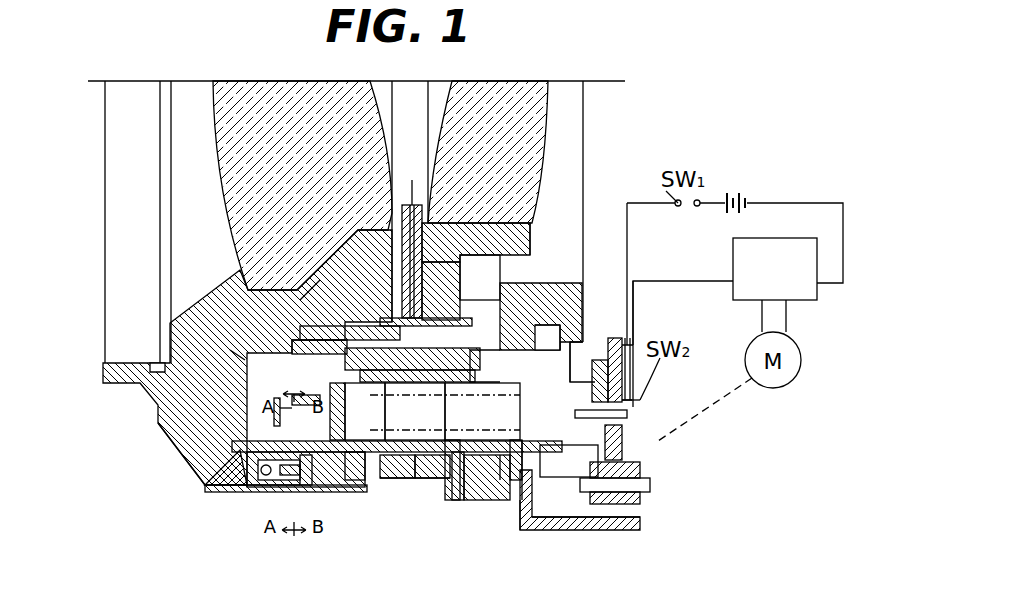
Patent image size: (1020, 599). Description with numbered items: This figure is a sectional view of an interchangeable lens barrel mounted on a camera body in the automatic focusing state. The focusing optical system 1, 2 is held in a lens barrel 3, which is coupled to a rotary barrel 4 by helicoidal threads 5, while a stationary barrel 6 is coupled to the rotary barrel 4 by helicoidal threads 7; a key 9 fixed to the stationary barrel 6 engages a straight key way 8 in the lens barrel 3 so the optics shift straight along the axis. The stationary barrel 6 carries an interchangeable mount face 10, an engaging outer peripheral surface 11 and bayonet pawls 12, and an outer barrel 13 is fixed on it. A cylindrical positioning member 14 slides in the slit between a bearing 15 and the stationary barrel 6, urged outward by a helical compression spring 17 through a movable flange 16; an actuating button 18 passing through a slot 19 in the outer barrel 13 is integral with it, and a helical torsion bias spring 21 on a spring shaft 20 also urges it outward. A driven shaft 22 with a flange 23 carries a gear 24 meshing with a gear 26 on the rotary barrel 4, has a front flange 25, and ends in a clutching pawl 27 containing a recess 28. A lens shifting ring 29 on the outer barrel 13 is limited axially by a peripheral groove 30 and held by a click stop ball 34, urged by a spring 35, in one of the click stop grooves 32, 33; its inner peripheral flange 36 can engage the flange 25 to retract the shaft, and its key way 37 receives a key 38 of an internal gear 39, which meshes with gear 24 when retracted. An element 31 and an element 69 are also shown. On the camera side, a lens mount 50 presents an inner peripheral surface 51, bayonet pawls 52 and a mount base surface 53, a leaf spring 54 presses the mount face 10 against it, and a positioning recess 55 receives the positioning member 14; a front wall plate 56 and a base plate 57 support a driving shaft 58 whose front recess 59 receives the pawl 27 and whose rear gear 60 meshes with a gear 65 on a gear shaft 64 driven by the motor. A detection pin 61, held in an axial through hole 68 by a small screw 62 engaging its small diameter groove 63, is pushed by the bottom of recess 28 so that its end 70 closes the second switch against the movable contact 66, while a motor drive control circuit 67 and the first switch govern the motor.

The optical system for focusing 1 is at (283, 98).
The optical system for focusing 2 is at (503, 100).
The lens barrel 3 is at (220, 302).
The rotary barrel 4 is at (285, 303).
The helicoidal threads 5 is at (398, 312).
The stationary barrel 6 is at (480, 277).
The helicoidal threads 7 is at (392, 318).
The straight key way 8 is at (436, 318).
The key 9 is at (476, 244).
The interchangeable mount face 10 is at (534, 316).
The engaging outer peripheral surface 11 is at (512, 342).
The bayonet pawls 12 is at (575, 330).
The outer barrel 13 is at (352, 480).
The cylindrical positioning member 14 is at (478, 480).
The bearing 15 is at (345, 340).
The movable flange 16 is at (440, 362).
The helical compression spring 17 is at (365, 332).
The actuating button 18 is at (398, 480).
The slot 19 is at (385, 478).
The spring shaft 20 is at (360, 480).
The helical torsion bias spring 21 is at (415, 478).
The driven shaft 22 is at (482, 411).
The flange 23 is at (445, 411).
The gear 24 is at (364, 411).
The flange 25 is at (272, 408).
The gear 26 is at (312, 345).
The clutching pawl 27 is at (452, 502).
The recess 28 is at (520, 485).
The lens shifting ring 29 is at (183, 434).
The peripheral groove 30 is at (263, 475).
The guide 31 is at (318, 492).
The click stop groove 32 is at (298, 482).
The click stop groove 33 is at (262, 490).
The click stop ball 34 is at (248, 496).
The spring 35 is at (240, 488).
The inner peripheral flange 36 is at (218, 370).
The key way 37 is at (200, 470).
The key 38 is at (205, 488).
The internal gear 39 is at (227, 344).
The lens mount 50 is at (575, 350).
The inner peripheral surface 51 is at (540, 322).
The bayonet pawls 52 is at (558, 326).
The mount base surface 53 is at (512, 485).
The leaf spring 54 is at (572, 340).
The positioning recess 55 is at (525, 480).
The front wall plate 56 is at (618, 530).
The base plate 57 is at (625, 455).
The driving shaft 58 is at (569, 460).
The recess 59 is at (548, 505).
The gear 60 is at (630, 400).
The detection pin 61 is at (626, 380).
The small screw 62 is at (612, 340).
The small diameter groove 63 is at (534, 502).
The gear shaft 64 is at (650, 485).
The gear 65 is at (640, 502).
The movable contact 66 is at (640, 400).
The motor drive control circuit 67 is at (725, 322).
The axial through hole 68 is at (633, 330).
The frame 69 is at (531, 262).
The end of detection pin 70 is at (632, 345).